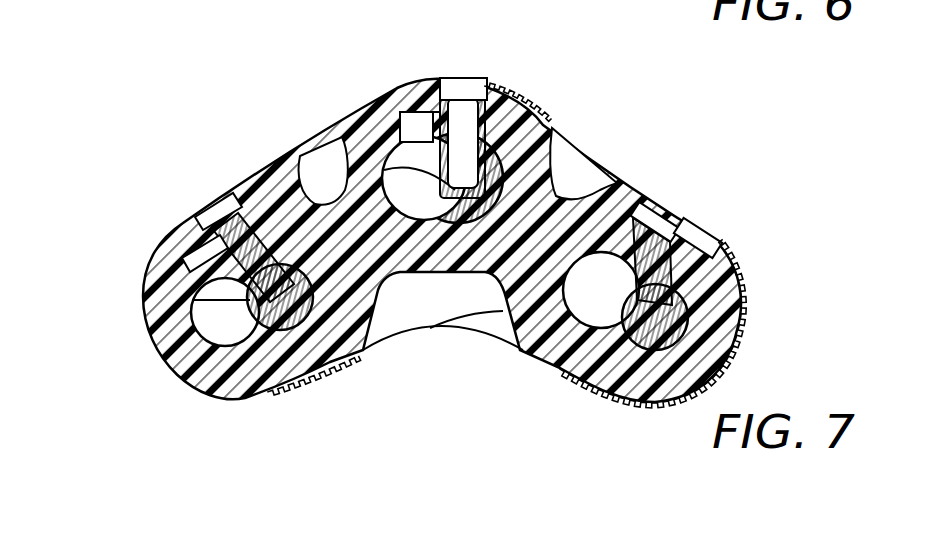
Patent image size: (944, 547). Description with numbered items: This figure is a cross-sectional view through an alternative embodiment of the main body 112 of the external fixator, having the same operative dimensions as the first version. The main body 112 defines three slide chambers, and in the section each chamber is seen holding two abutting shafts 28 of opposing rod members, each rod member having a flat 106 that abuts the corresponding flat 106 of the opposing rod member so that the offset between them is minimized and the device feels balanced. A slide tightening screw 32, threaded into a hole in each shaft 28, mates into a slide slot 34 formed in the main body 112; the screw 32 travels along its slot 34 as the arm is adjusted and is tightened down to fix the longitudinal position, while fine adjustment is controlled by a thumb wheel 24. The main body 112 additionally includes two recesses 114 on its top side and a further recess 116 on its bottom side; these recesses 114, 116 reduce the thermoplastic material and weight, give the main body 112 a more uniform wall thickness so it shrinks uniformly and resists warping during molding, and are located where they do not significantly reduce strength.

The main body 112 is at (285, 108).
The thumb wheel 24 is at (518, 98).
The shaft 28 is at (292, 250).
The slide tightening screw 32 is at (225, 195).
The slide slot 34 is at (188, 255).
The flat 106 is at (245, 297).
The recess 114 is at (333, 184).
The recess 116 is at (440, 326).